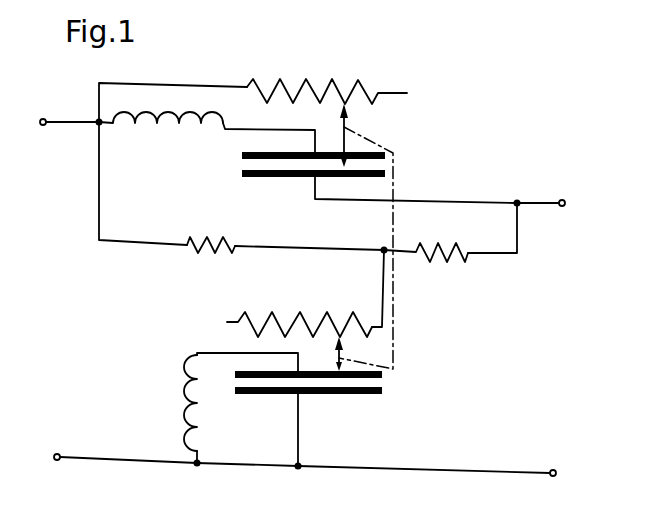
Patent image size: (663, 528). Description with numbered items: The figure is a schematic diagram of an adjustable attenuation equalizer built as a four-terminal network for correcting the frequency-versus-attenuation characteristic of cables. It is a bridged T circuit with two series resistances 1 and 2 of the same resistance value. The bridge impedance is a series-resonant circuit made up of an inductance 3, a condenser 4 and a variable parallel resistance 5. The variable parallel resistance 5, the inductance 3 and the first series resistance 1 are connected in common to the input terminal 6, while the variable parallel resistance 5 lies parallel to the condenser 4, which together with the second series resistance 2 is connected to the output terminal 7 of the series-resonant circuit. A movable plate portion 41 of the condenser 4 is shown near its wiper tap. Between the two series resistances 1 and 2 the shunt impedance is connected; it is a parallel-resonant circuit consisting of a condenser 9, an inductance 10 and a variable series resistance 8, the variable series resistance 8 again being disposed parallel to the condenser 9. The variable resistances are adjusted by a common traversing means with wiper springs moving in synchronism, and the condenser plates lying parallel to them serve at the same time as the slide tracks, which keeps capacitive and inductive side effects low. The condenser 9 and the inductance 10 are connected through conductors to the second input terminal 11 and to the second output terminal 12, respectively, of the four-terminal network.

The series resistance 1 is at (197, 253).
The series resistance 2 is at (438, 262).
The inductance 3 is at (158, 122).
The condenser 4 is at (250, 163).
The movable capacitor plate coupling 41 is at (387, 174).
The variable parallel resistance 5 is at (312, 87).
The input terminal 6 is at (43, 126).
The output terminal 7 is at (562, 207).
The variable series resistance 8 is at (302, 315).
The condenser 9 is at (370, 387).
The inductance 10 is at (183, 413).
The second input terminal 11 is at (53, 457).
The second output terminal 12 is at (557, 473).